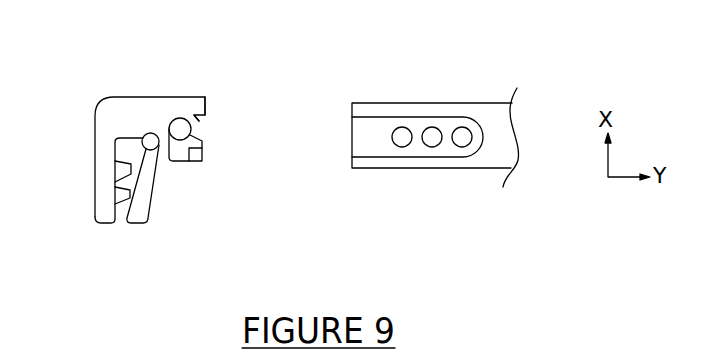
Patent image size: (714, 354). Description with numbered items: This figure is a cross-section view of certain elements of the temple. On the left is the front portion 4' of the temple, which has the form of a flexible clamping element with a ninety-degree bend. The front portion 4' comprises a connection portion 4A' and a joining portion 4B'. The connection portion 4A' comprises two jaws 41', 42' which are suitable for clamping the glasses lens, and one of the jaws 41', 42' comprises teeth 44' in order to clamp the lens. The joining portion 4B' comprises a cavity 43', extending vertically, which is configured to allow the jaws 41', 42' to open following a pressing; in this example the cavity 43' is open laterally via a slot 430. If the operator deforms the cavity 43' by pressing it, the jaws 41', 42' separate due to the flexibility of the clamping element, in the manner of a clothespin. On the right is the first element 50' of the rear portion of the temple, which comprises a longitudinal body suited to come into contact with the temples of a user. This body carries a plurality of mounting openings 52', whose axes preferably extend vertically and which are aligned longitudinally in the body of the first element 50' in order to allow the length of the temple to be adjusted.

The front portion 4' is at (138, 135).
The jaw 41' is at (175, 203).
The jaw 42' is at (77, 180).
The cavity 43' is at (168, 91).
The teeth 44' is at (80, 216).
The slot 430 is at (184, 117).
The connection portion 4A' is at (137, 264).
The joining portion 4B' is at (242, 77).
The first element 50' is at (449, 113).
The mounting openings 52' is at (432, 97).